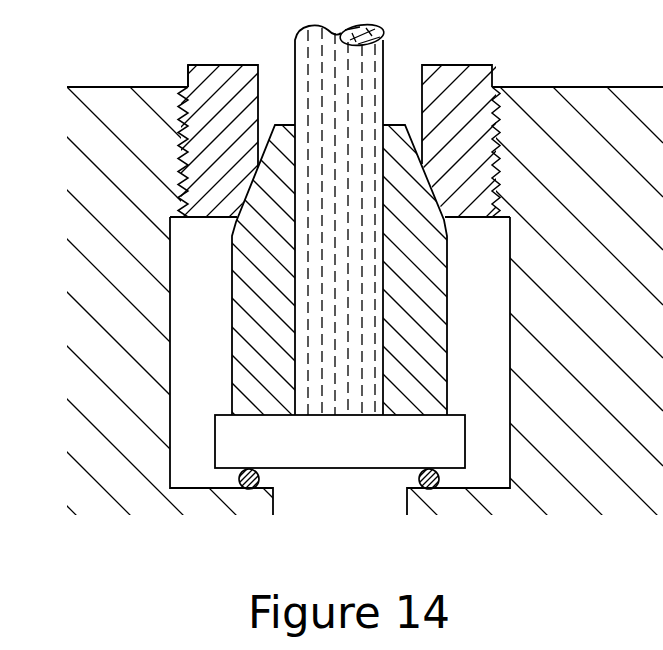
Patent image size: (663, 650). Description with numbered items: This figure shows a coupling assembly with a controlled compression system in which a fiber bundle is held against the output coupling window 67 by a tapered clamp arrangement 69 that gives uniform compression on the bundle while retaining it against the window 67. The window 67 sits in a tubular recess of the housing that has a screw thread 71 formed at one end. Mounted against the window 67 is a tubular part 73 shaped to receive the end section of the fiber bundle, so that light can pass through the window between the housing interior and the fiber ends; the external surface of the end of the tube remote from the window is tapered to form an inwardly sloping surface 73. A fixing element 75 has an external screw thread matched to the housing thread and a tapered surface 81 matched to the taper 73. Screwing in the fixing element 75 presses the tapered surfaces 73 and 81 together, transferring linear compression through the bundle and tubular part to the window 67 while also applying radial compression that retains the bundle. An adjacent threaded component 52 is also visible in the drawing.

The first gland nut 52 is at (182, 110).
The fixing element 75 is at (462, 87).
The screw thread 71 is at (176, 156).
The tapered surface 81 is at (470, 172).
The tubular part 73 is at (234, 231).
The tapered clamp arrangement 69 is at (205, 368).
The output coupling window 67 is at (448, 443).